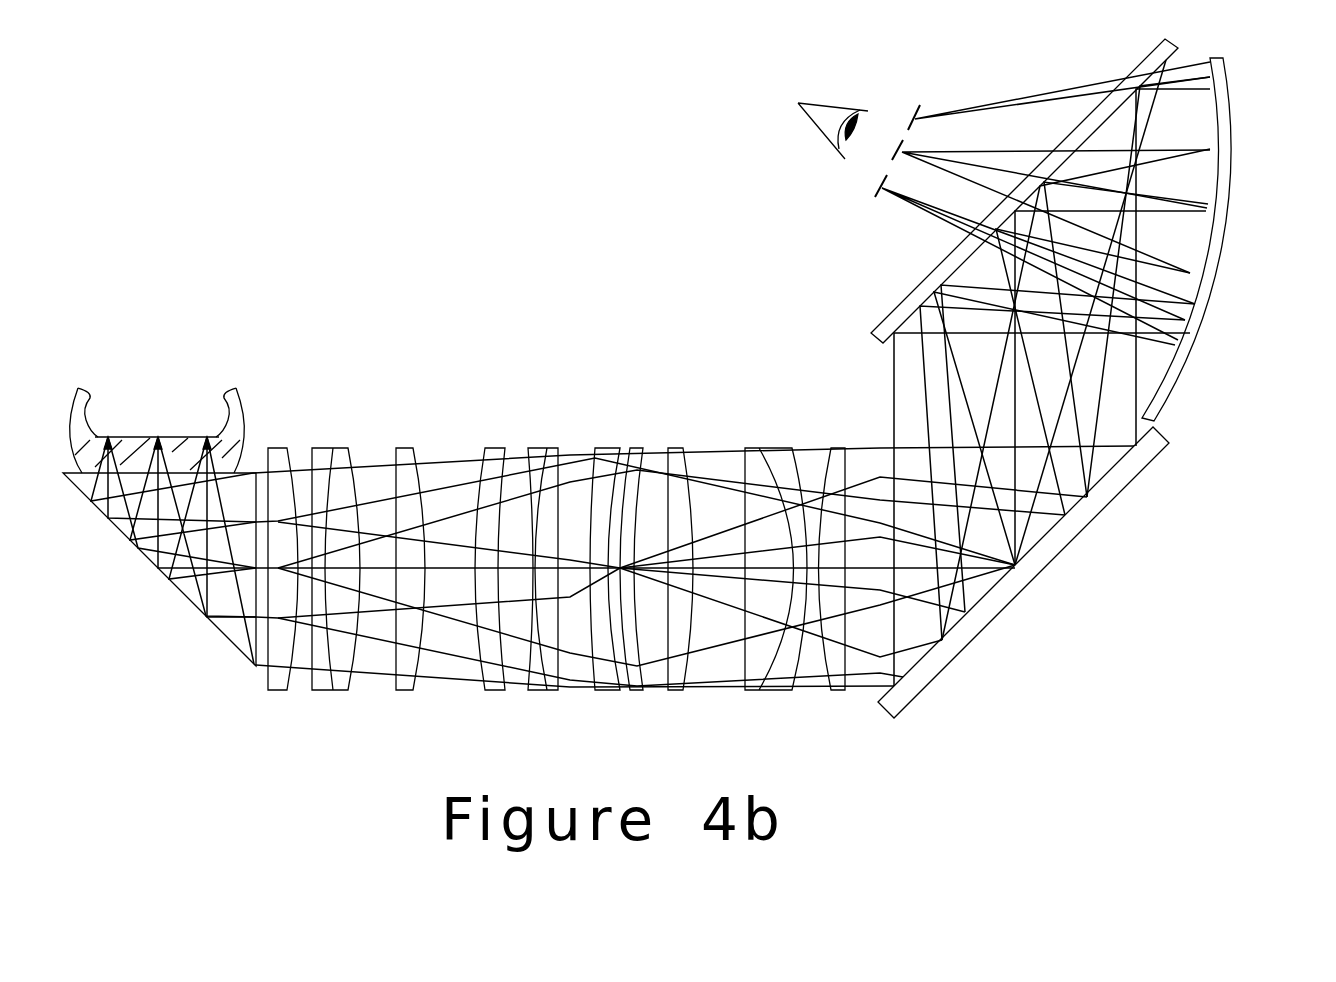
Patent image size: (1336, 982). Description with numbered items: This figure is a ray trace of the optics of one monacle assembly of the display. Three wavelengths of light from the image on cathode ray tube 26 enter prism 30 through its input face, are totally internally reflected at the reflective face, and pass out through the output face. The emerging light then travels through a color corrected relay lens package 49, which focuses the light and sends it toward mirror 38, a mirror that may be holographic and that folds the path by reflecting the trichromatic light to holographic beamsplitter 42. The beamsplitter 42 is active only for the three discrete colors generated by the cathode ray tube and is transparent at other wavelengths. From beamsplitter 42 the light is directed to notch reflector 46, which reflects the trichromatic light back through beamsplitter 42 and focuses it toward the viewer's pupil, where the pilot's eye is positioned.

The cathode ray tube 26 is at (232, 412).
The totally internally reflecting prism 30 is at (225, 636).
The mirror 38 is at (1035, 577).
The holographic beamsplitter 42 is at (907, 310).
The notch reflector 46 is at (1220, 258).
The lens package 49 is at (866, 692).